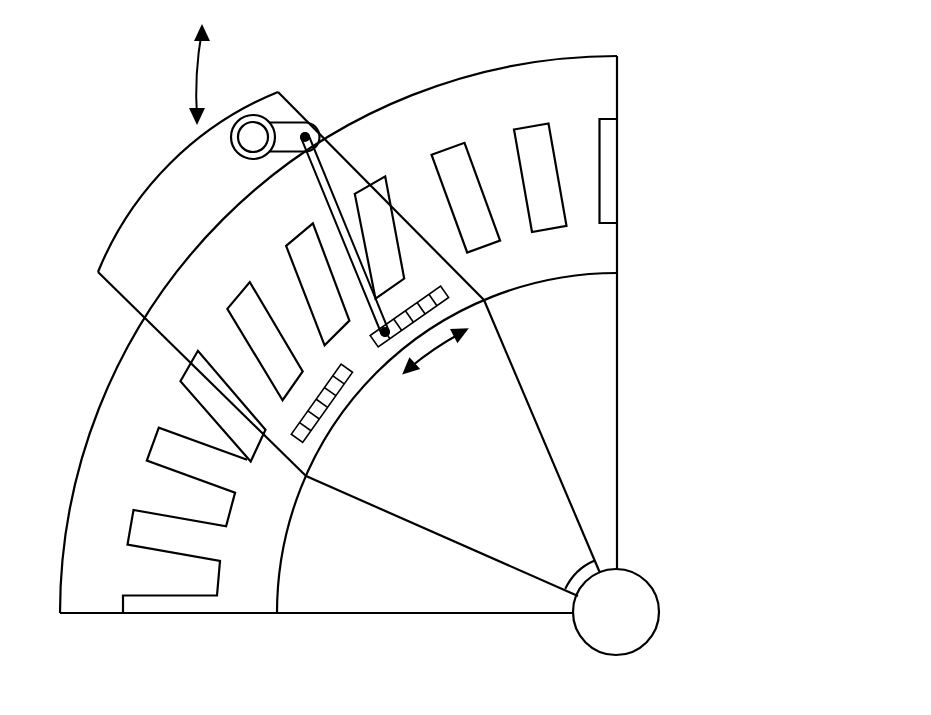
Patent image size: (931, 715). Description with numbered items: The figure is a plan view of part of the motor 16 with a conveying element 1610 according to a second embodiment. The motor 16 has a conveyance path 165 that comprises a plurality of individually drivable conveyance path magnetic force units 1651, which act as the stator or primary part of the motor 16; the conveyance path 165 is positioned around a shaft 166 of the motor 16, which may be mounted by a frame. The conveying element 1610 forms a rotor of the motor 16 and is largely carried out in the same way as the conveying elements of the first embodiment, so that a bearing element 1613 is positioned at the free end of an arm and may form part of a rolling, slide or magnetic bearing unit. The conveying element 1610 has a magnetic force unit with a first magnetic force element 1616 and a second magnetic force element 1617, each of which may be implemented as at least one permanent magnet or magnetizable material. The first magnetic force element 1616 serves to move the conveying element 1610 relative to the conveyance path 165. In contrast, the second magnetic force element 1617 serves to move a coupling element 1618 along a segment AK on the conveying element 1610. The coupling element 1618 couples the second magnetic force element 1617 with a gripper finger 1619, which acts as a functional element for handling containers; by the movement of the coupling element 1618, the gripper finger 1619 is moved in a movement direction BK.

The motor 16 is at (706, 39).
The conveyance path 165 is at (380, 334).
The shaft 166 is at (645, 574).
The conveying element 1610 is at (262, 284).
The bearing element 1613 is at (580, 563).
The first magnetic force element 1616 is at (357, 403).
The second magnetic force element 1617 is at (445, 290).
The coupling element 1618 is at (364, 234).
The gripper finger 1619 is at (250, 106).
The conveyance path magnetic force unit 1651 is at (532, 122).